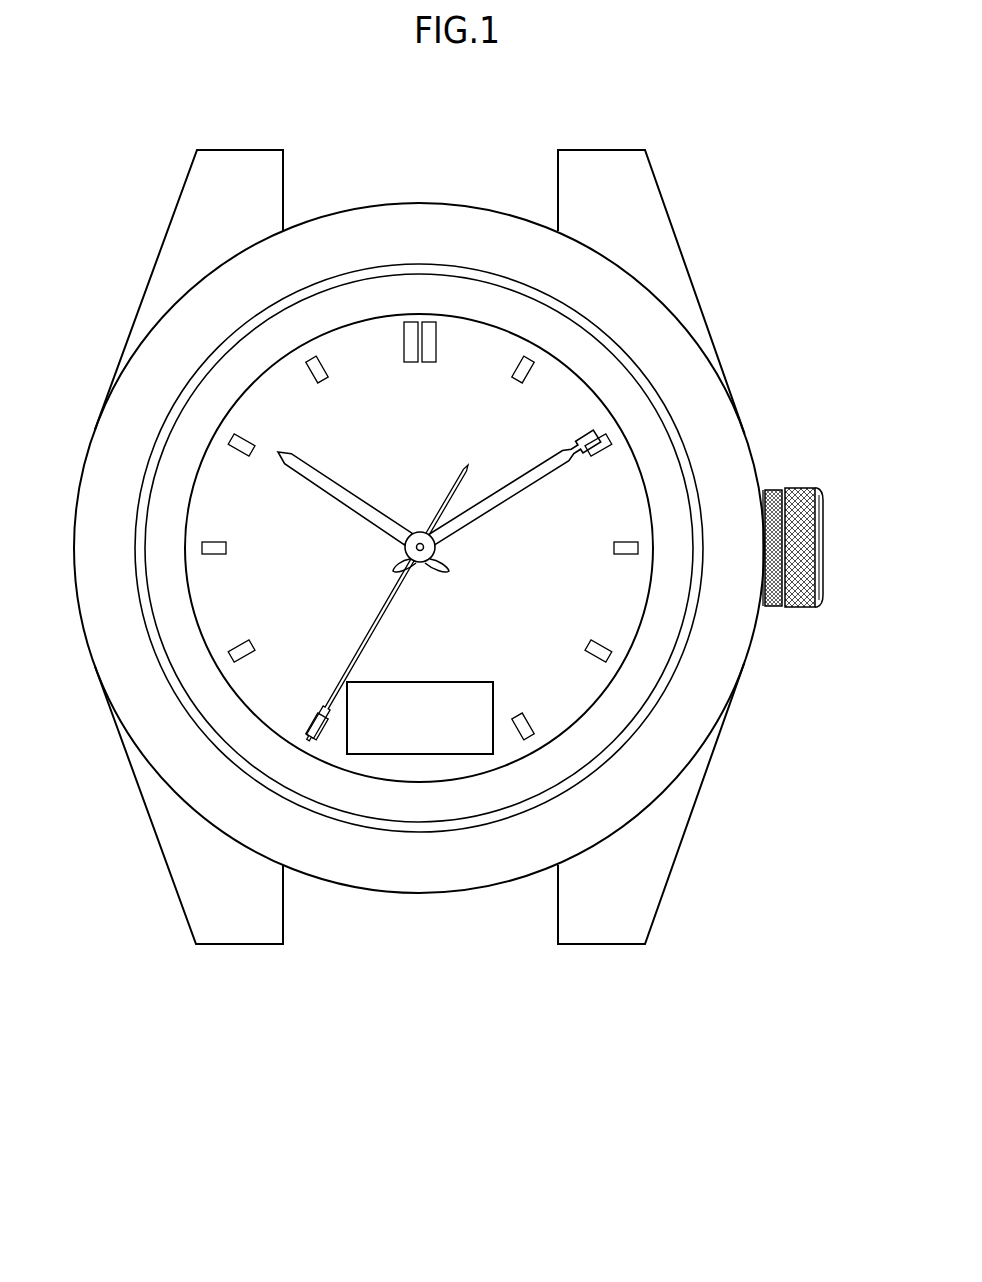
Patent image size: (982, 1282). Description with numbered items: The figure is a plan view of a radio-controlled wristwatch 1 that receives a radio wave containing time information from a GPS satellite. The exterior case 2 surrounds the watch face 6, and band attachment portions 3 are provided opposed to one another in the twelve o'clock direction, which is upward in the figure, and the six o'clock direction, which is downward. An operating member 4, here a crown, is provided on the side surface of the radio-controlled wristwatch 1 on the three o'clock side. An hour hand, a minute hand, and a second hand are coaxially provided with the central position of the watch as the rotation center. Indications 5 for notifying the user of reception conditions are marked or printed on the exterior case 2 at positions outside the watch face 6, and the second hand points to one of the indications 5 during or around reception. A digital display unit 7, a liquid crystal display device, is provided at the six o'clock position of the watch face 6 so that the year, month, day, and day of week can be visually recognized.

The radio-controlled wristwatch 1 is at (219, 1069).
The exterior case 2 is at (740, 683).
The band attachment portions 3 is at (233, 150).
The operating member 4 is at (825, 528).
The indications 5 is at (187, 413).
The watch face 6 is at (225, 607).
The digital display unit 7 is at (415, 755).